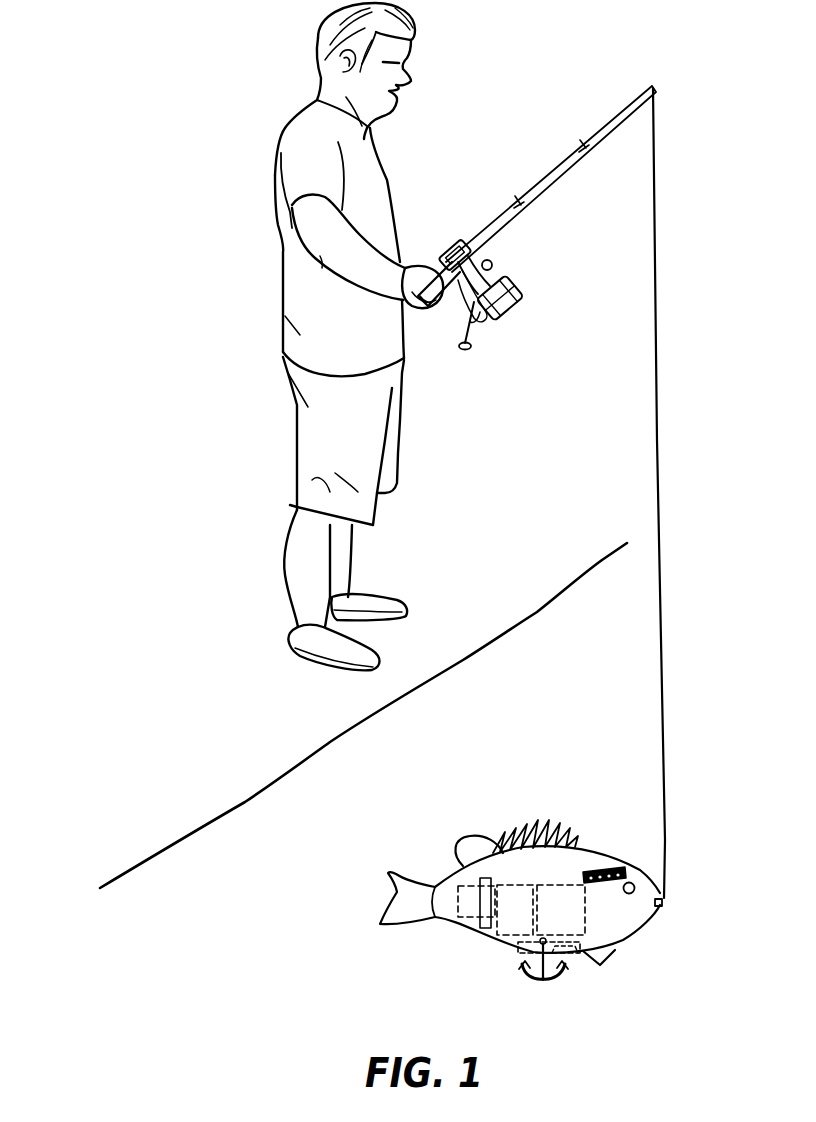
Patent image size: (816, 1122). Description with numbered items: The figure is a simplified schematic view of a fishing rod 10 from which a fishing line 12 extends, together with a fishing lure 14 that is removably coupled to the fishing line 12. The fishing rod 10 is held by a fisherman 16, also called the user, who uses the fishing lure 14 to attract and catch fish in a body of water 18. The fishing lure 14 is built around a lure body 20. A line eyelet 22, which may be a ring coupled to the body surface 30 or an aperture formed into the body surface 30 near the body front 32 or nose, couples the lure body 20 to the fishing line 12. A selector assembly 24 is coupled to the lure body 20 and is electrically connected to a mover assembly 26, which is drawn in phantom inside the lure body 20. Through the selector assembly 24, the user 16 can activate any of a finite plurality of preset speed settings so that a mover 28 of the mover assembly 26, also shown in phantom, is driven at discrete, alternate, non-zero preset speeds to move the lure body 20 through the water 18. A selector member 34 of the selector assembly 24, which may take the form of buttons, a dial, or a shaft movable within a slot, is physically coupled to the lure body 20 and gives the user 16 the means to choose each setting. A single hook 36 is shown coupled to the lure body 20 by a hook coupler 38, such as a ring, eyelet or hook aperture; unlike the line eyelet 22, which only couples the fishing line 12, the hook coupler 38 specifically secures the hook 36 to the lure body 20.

The fishing rod 10 is at (490, 226).
The fishing line 12 is at (655, 253).
The fishing lure 14 is at (403, 972).
The fisherman 16 is at (300, 318).
The body of water 18 is at (202, 884).
The lure body 20 is at (530, 858).
The line eyelet 22 is at (666, 904).
The selector assembly 24 is at (627, 864).
The mover assembly 26 is at (545, 884).
The mover 28 is at (510, 914).
The body surface 30 is at (617, 928).
The body front 32 is at (655, 918).
The selector member 34 is at (589, 867).
The hook 36 is at (543, 976).
The hook coupler 38 is at (557, 953).